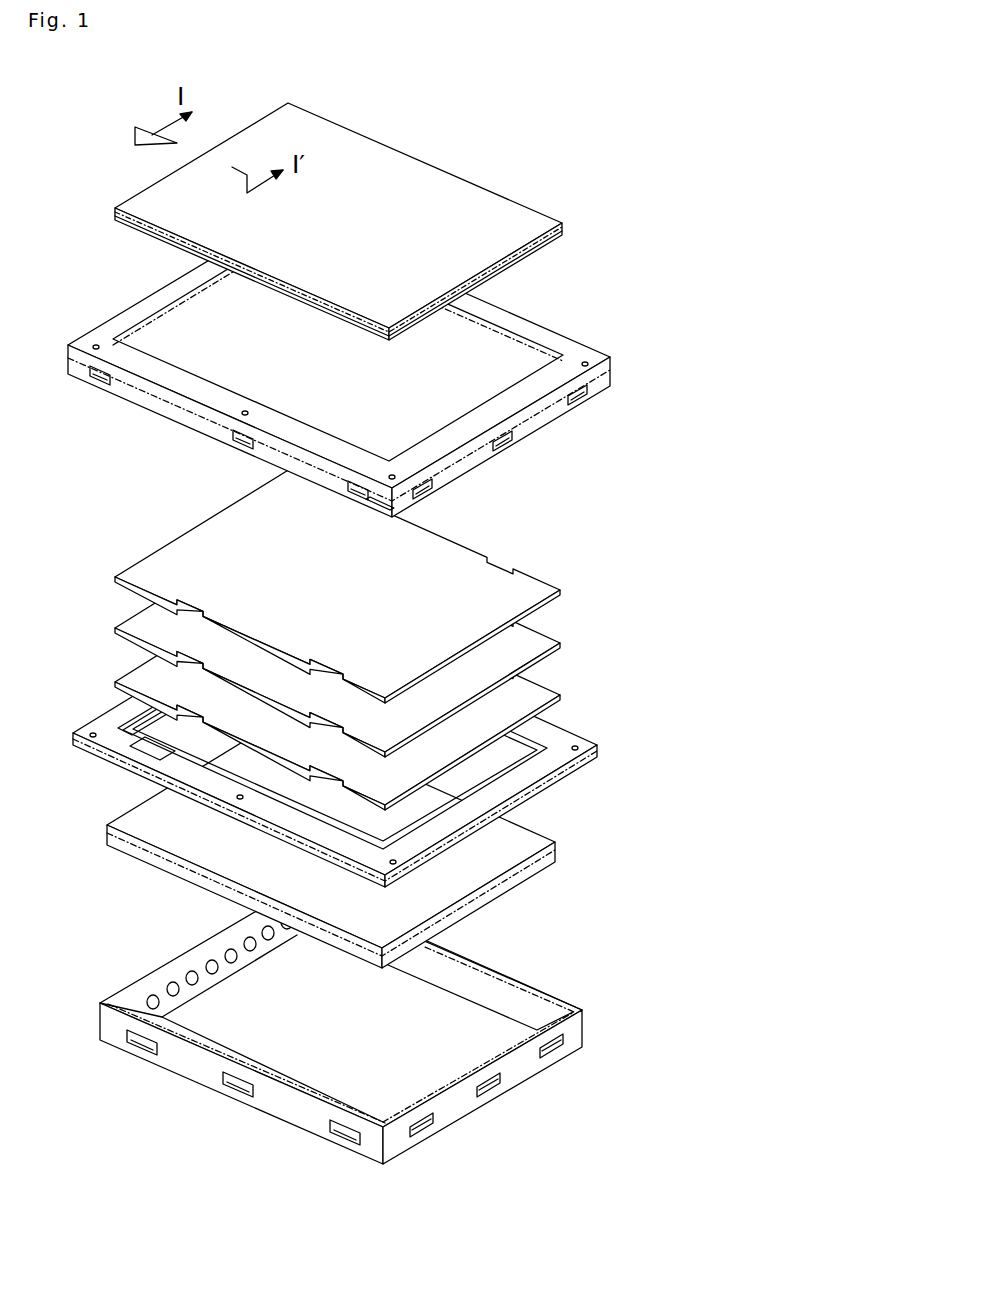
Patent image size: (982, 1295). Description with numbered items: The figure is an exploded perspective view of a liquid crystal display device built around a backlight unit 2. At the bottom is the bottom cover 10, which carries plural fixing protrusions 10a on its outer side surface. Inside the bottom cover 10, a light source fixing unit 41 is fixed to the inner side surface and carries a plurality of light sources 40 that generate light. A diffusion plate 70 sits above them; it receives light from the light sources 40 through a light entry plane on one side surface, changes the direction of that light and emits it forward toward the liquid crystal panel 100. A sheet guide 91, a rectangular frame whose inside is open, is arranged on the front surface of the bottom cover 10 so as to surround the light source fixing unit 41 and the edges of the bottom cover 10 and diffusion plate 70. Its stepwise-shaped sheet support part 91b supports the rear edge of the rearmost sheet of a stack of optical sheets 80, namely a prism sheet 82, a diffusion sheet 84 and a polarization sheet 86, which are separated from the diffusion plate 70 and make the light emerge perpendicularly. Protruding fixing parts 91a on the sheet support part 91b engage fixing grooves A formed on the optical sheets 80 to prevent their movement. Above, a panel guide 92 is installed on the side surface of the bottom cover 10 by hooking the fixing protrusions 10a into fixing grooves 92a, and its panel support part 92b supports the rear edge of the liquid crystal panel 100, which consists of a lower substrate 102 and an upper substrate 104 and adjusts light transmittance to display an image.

The backlight unit 2 is at (409, 816).
The bottom cover 10 is at (368, 1025).
The fixing protrusion 10a is at (577, 1048).
The light source 40 is at (167, 966).
The light source fixing unit 41 is at (137, 990).
The diffusion plate 70 is at (548, 855).
The optical sheets 80 is at (377, 639).
The prism sheet 82 is at (563, 696).
The diffusion sheet 84 is at (563, 644).
The polarization sheet 86 is at (345, 586).
The sheet guide 91 is at (343, 745).
The protruding fixing part 91a is at (170, 750).
The sheet support part 91b is at (135, 715).
The panel guide 92 is at (371, 365).
The fixing groove 92a is at (513, 433).
The panel support part 92b is at (553, 380).
The liquid crystal panel 100 is at (409, 221).
The lower substrate 102 is at (553, 238).
The upper substrate 104 is at (547, 223).
The fixing groove A is at (193, 608).